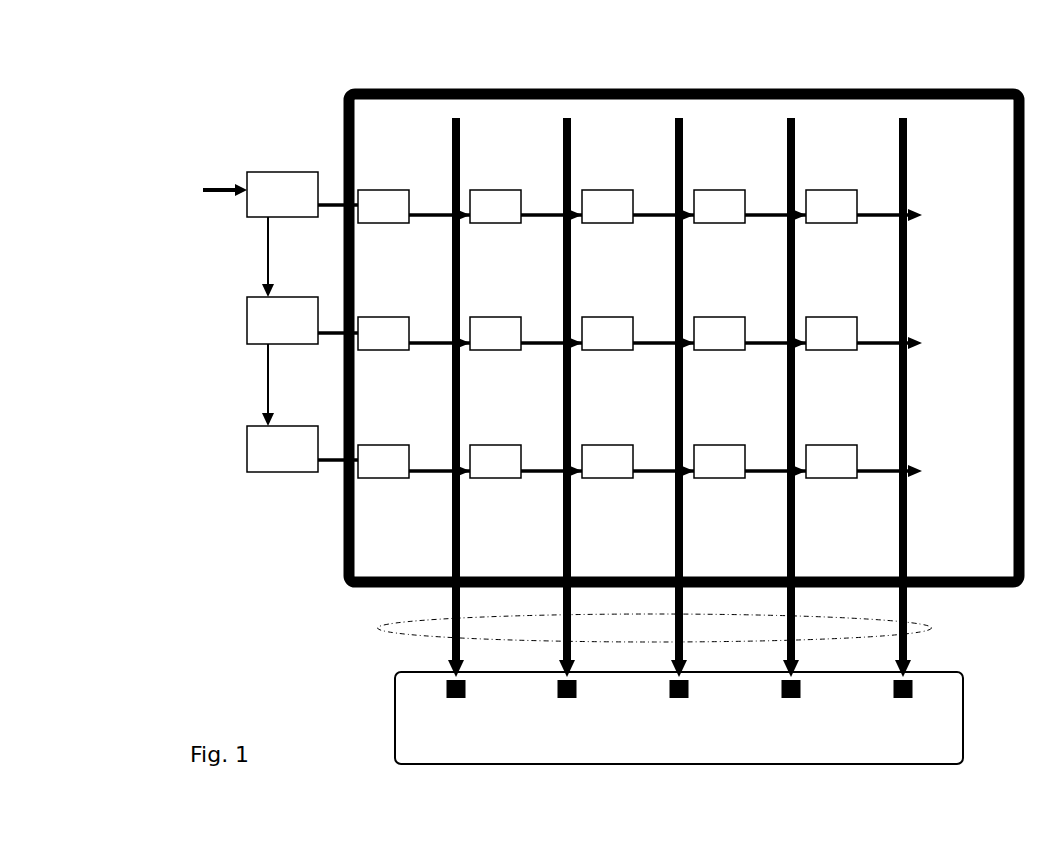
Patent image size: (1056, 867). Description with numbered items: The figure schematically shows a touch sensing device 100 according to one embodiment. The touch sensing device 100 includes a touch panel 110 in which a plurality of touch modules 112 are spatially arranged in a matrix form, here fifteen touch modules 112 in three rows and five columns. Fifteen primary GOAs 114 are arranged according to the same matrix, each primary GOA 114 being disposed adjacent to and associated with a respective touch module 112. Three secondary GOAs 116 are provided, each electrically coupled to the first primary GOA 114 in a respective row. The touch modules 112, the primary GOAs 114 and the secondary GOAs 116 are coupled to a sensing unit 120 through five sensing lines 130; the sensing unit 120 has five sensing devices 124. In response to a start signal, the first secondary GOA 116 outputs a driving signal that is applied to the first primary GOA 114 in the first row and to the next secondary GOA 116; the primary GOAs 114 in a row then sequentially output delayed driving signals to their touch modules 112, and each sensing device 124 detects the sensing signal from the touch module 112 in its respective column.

The touch sensing device 100 is at (678, 24).
The touch panel 110 is at (957, 150).
The touch modules 112 is at (553, 214).
The primary GOAs 114 is at (480, 198).
The secondary GOAs 116 is at (247, 321).
The sensing unit 120 is at (930, 722).
The sensing devices 124 is at (443, 690).
The sensing lines 130 is at (677, 397).